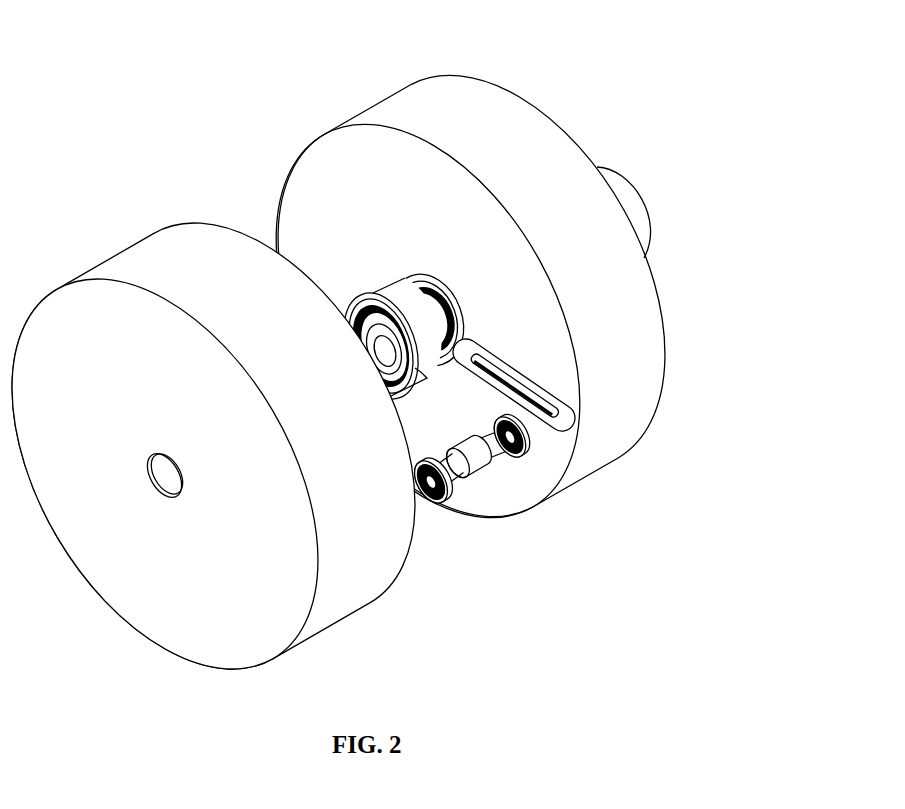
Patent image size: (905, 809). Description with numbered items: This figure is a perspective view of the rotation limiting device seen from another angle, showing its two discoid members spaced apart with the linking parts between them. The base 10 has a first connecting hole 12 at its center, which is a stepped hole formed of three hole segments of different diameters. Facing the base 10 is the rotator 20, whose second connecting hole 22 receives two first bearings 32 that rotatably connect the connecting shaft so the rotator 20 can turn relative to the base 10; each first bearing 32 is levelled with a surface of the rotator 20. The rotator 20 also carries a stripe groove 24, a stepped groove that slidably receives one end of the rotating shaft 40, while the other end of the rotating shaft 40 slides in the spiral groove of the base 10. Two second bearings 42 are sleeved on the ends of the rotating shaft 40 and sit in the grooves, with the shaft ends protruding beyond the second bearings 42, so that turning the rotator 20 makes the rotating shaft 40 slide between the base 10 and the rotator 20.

The base 10 is at (372, 580).
The first connecting hole 12 is at (167, 480).
The rotator 20 is at (495, 103).
The second connecting hole 22 is at (437, 277).
The stripe groove 24 is at (542, 418).
The first bearing 32 is at (378, 300).
The rotating shaft 40 is at (483, 462).
The second bearing 42 is at (528, 445).